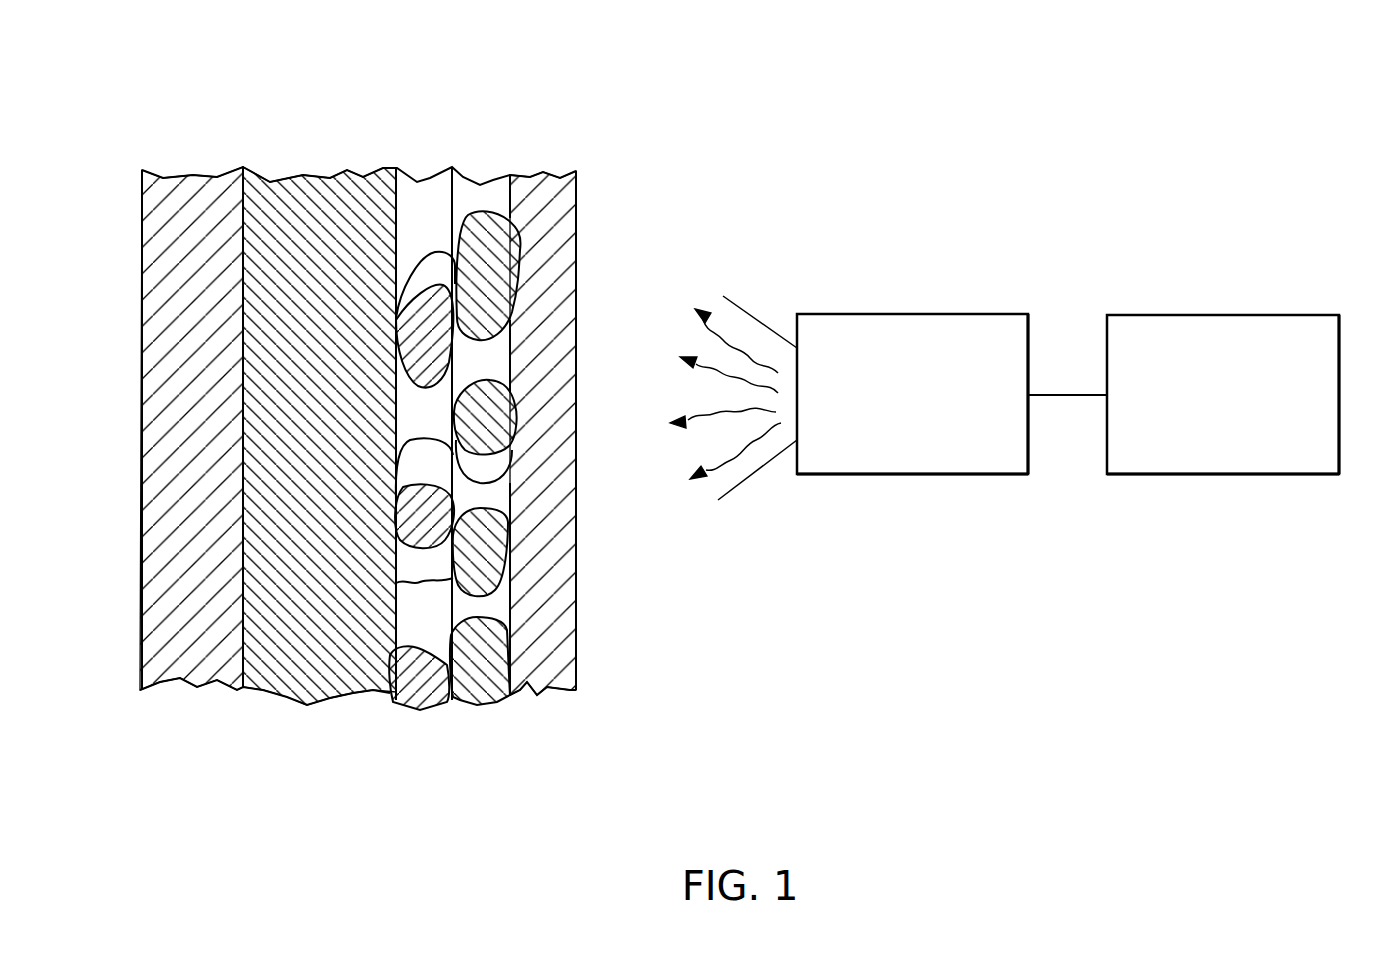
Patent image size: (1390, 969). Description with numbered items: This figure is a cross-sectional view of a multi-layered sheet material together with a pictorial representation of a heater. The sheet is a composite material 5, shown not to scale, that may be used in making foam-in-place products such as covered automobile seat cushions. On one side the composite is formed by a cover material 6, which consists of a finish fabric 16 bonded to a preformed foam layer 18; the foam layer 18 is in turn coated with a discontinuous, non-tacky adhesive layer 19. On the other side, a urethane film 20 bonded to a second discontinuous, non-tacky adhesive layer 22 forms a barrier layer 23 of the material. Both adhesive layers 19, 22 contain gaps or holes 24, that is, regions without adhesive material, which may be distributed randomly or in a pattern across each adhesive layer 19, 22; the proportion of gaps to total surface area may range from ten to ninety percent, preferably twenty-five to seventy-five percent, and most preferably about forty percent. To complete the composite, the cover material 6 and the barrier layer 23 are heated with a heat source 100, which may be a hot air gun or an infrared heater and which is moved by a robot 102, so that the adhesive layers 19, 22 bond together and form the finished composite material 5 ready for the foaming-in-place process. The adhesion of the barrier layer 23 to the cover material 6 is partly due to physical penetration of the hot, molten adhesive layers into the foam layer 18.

The composite material 5 is at (193, 775).
The cover material 6 is at (142, 103).
The finish fabric 16 is at (193, 175).
The preformed foam layer 18 is at (312, 177).
The discontinuous, non-tacky adhesive layer 19 is at (427, 180).
The urethane film 20 is at (533, 693).
The second discontinuous, non-tacky adhesive layer 22 is at (478, 707).
The barrier layer 23 is at (582, 769).
The gaps or holes 24 is at (481, 183).
The heat source 100 is at (907, 475).
The robot 102 is at (1223, 475).